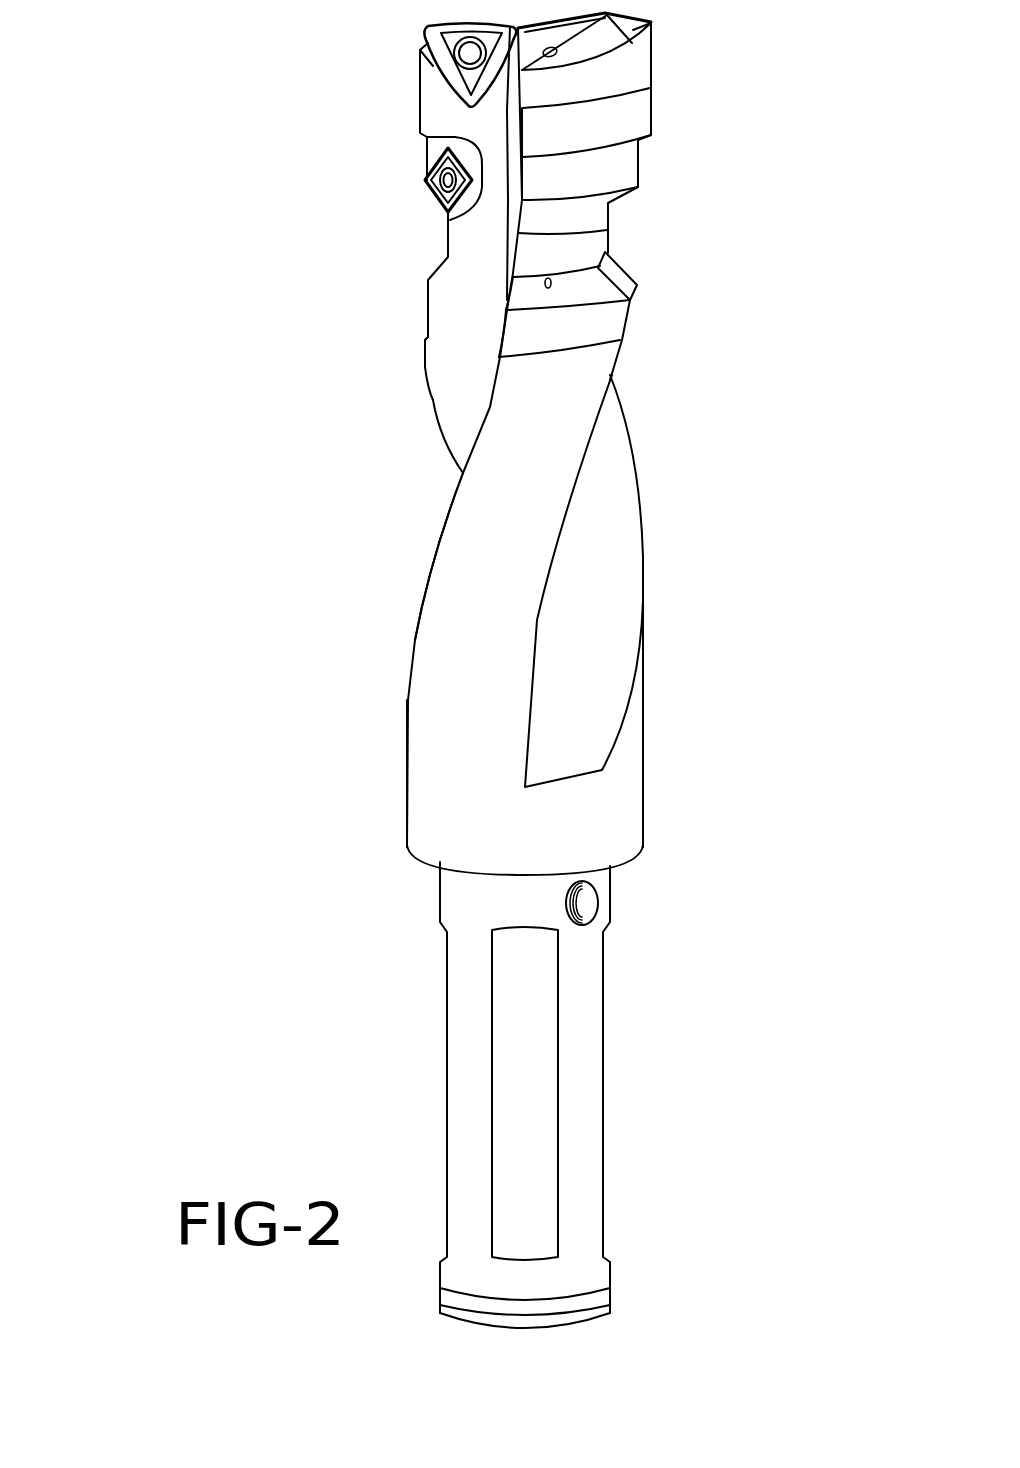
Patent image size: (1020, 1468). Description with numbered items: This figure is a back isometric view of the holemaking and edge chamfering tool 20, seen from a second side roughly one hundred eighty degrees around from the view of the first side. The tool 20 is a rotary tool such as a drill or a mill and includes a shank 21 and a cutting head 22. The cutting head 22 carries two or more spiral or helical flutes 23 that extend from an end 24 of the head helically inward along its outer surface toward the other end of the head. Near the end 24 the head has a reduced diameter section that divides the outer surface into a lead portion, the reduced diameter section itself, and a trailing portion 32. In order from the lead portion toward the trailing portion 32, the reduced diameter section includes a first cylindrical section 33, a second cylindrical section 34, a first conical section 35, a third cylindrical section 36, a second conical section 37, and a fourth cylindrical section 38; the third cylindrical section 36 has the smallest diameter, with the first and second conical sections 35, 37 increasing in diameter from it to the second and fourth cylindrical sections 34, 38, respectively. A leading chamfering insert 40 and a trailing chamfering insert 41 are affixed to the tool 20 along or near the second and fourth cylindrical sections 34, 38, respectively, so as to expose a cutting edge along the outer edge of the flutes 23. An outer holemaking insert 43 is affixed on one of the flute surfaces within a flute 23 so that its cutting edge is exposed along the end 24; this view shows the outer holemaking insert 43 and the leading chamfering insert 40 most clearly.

The tool 20 is at (280, 217).
The shank 21 is at (603, 1092).
The cutting head 22 is at (403, 727).
The flutes 23 is at (467, 383).
The end 24 is at (653, 13).
The trailing portion 32 is at (645, 787).
The first cylindrical section 33 is at (653, 107).
The second cylindrical section 34 is at (640, 160).
The first conical section 35 is at (620, 197).
The third cylindrical section 36 is at (607, 233).
The second conical section 37 is at (573, 282).
The fourth cylindrical section 38 is at (558, 330).
The leading chamfering insert 40 is at (425, 165).
The trailing chamfering insert 41 is at (623, 272).
The outer holemaking insert 43 is at (428, 44).